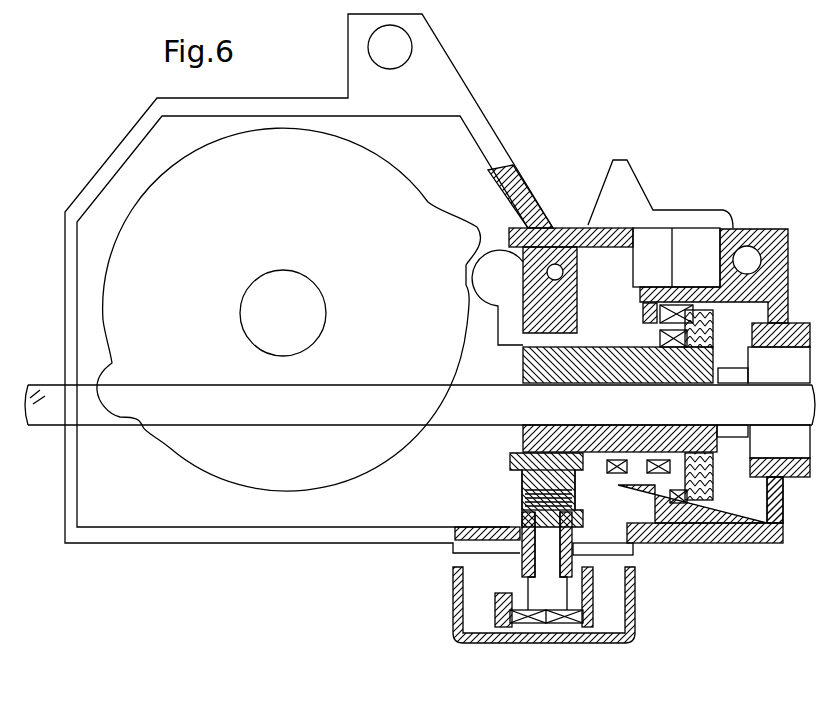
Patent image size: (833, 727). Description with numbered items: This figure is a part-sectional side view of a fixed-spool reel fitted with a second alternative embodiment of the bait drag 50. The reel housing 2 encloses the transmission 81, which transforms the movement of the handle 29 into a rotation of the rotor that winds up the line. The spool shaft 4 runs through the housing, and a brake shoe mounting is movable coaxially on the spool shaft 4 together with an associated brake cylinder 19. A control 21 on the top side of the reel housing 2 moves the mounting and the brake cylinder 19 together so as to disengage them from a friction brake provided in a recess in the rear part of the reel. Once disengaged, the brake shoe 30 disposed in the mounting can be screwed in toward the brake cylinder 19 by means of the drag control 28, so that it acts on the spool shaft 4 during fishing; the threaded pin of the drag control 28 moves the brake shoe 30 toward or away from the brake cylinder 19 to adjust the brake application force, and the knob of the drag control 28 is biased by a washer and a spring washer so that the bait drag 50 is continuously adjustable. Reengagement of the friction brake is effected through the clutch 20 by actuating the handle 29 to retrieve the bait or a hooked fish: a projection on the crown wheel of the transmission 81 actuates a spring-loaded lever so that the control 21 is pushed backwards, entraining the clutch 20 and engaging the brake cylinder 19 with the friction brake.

The reel housing 2 is at (266, 560).
The spool shaft 4 is at (96, 437).
The brake cylinder 19 is at (511, 437).
The clutch 20 is at (647, 475).
The control 21 is at (622, 195).
The drag control 28 is at (557, 654).
The handle 29 is at (172, 460).
The brake shoe 30 is at (498, 492).
The bait drag 50 is at (446, 606).
The transmission 81 is at (287, 124).